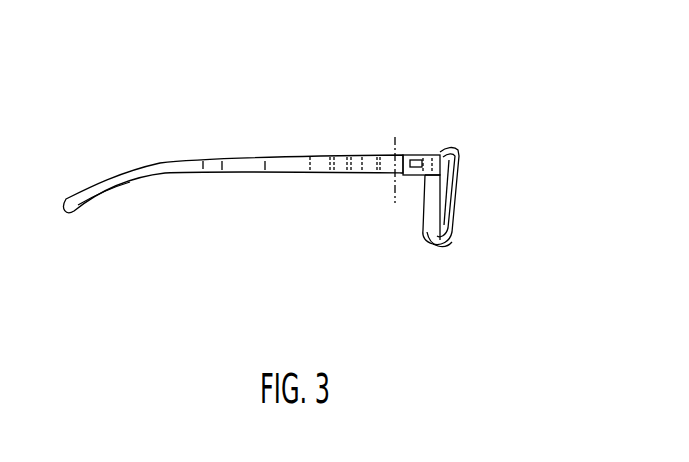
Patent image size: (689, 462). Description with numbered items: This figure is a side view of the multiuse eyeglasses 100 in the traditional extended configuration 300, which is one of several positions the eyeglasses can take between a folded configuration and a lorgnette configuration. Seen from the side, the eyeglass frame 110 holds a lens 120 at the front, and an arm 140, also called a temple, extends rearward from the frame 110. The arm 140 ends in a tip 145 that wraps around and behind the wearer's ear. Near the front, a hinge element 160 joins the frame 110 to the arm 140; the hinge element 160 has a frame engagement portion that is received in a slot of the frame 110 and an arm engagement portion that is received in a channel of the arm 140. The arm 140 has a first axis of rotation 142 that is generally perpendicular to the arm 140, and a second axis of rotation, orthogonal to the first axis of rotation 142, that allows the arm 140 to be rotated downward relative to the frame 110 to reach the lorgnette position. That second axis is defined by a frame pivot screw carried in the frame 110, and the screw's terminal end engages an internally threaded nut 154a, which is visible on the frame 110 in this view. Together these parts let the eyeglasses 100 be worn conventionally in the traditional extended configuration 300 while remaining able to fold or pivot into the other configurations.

The multiuse eyeglasses 100 is at (378, 108).
The eyeglass frame 110 is at (427, 230).
The lens 120 is at (460, 197).
The arm 140 is at (276, 170).
The first axis of rotation 142 is at (390, 158).
The tip 145 is at (110, 187).
The internally threaded nut 154a is at (420, 160).
The hinge element 160 is at (399, 170).
The traditional extended configuration 300 is at (447, 250).